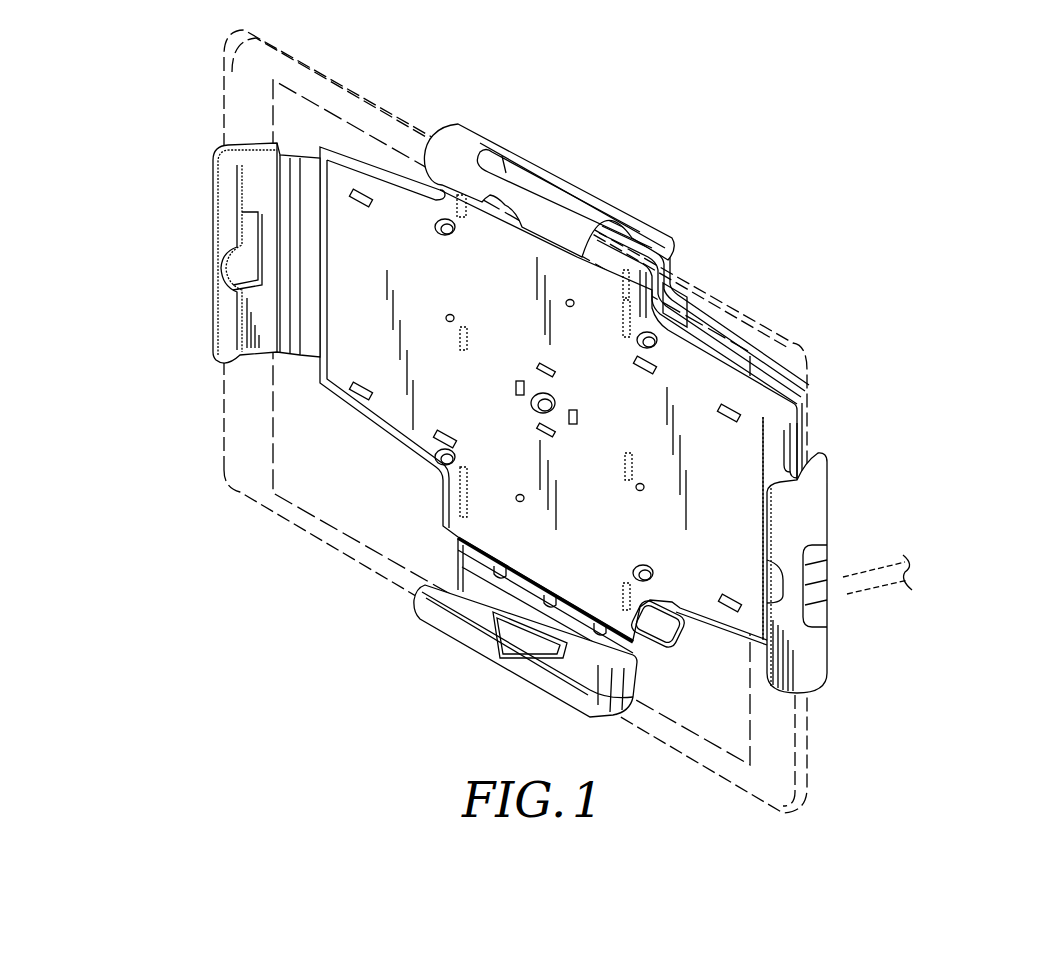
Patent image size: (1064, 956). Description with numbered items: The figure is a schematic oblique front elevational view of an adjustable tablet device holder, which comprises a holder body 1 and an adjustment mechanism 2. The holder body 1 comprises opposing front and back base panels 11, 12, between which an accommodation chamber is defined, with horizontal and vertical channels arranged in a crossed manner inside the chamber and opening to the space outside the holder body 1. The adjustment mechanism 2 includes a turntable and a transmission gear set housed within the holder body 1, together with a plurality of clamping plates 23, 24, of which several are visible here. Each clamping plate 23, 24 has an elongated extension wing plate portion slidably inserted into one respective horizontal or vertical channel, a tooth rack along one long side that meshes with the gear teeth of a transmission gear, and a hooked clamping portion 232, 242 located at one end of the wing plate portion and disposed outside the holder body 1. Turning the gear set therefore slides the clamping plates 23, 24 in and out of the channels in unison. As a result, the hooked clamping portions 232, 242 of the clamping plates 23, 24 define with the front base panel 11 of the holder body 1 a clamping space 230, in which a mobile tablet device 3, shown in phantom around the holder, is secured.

The holder body 1 is at (556, 385).
The adjustment mechanism 2 is at (547, 456).
The mobile tablet device 3 is at (362, 74).
The front base panel 11 is at (382, 413).
The back base panel 12 is at (707, 170).
The clamping plate 23 is at (588, 418).
The clamping plate 24 is at (481, 677).
The clamping space 230 is at (459, 579).
The hooked clamping portion 232 is at (803, 523).
The hooked clamping portion 242 is at (463, 630).